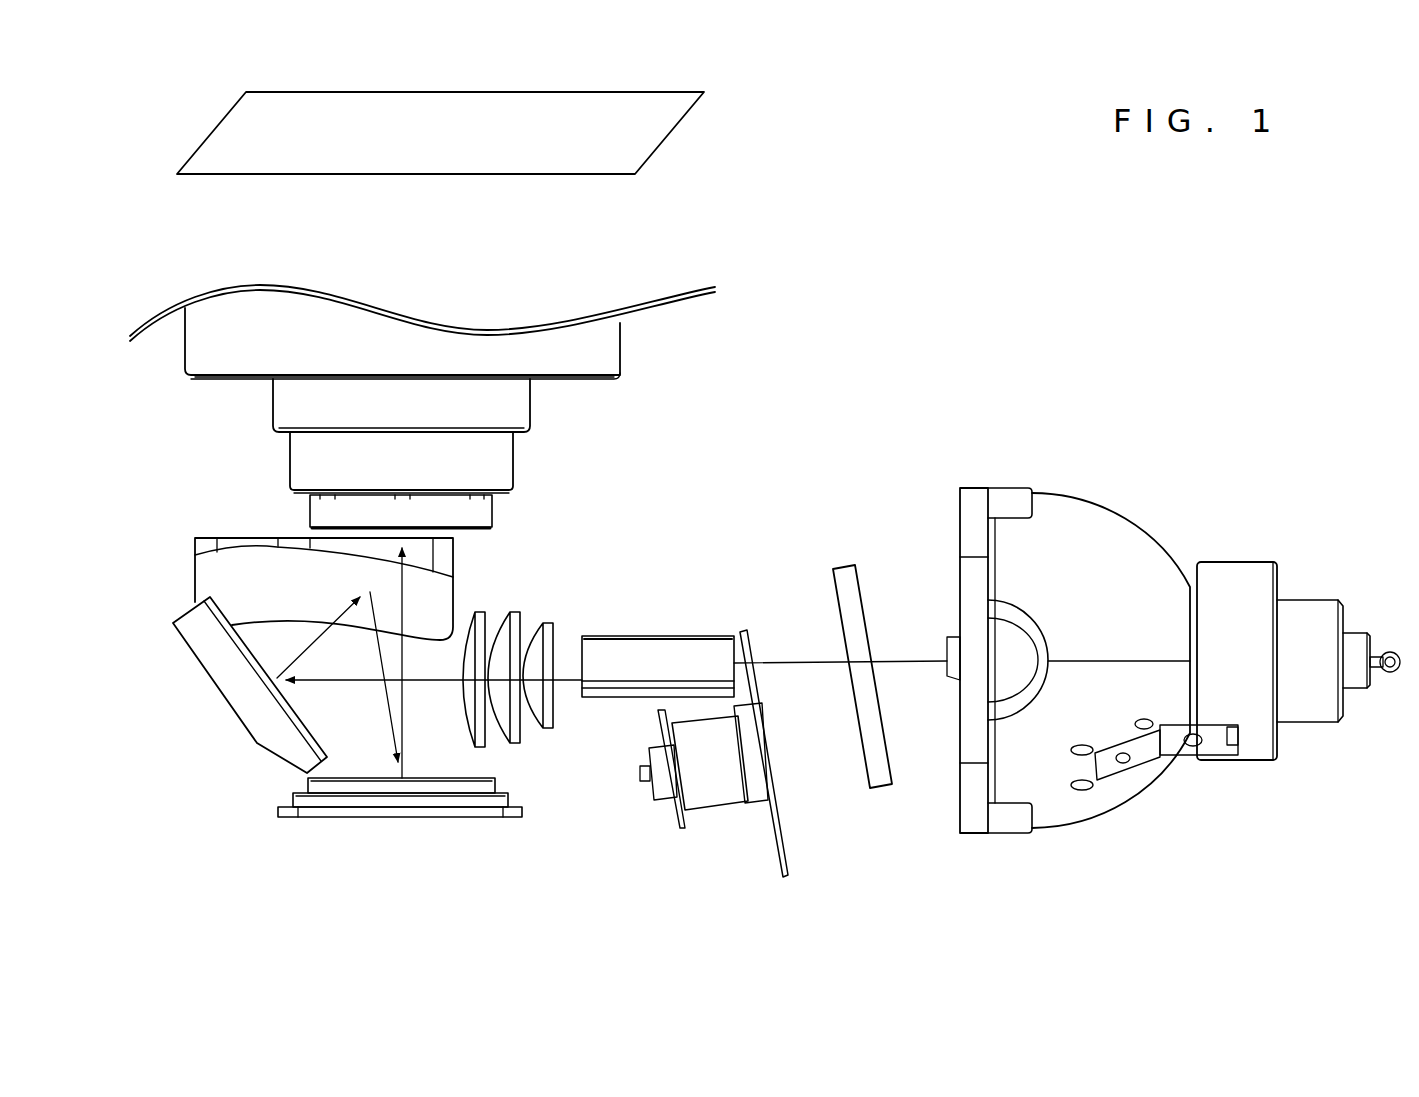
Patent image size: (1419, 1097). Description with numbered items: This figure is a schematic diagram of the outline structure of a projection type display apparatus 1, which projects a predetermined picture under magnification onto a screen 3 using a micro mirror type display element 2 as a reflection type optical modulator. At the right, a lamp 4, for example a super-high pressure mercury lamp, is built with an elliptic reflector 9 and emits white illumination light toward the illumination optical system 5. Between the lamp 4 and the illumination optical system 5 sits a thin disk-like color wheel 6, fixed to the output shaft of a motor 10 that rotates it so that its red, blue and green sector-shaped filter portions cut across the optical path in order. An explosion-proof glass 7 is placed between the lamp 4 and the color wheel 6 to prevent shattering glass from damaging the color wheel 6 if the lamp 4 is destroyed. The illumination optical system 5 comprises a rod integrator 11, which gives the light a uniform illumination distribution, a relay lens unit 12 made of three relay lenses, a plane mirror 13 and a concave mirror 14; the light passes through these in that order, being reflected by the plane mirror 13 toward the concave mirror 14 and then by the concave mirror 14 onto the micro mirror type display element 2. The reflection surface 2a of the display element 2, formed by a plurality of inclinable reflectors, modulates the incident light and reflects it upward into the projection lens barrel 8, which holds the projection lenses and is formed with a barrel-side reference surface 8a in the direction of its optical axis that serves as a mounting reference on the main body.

The projection type display apparatus 1 is at (1086, 236).
The micro mirror type display element 2 is at (388, 810).
The reflection surface 2a is at (453, 773).
The screen 3 is at (677, 134).
The lamp 4 is at (1003, 485).
The illumination optical system 5 is at (631, 540).
The color wheel 6 is at (777, 846).
The explosion-proof glass 7 is at (879, 788).
The projection lens barrel 8 is at (620, 354).
The barrel-side reference surface 8a is at (601, 382).
The elliptic reflector 9 is at (1105, 523).
The motor 10 is at (716, 806).
The rod integrator 11 is at (658, 643).
The relay lens unit 12 is at (473, 597).
The plane mirror 13 is at (237, 698).
The concave mirror 14 is at (241, 542).